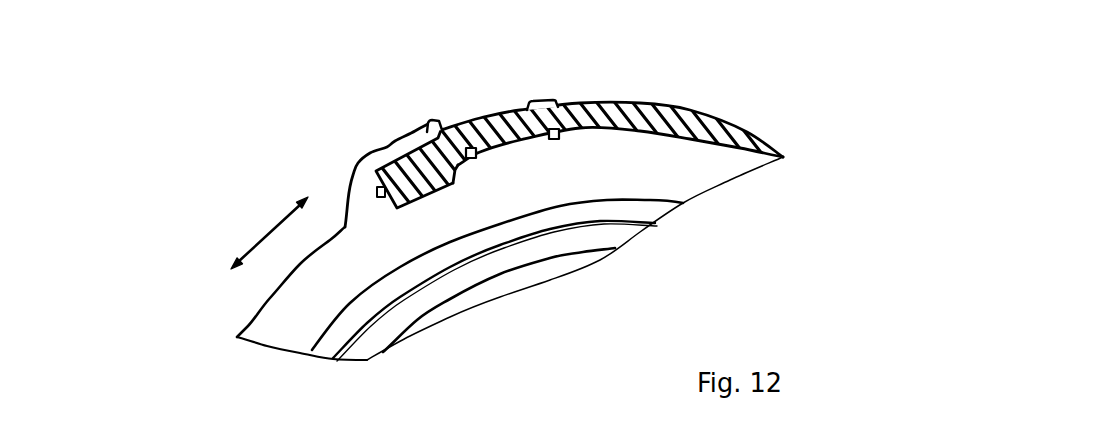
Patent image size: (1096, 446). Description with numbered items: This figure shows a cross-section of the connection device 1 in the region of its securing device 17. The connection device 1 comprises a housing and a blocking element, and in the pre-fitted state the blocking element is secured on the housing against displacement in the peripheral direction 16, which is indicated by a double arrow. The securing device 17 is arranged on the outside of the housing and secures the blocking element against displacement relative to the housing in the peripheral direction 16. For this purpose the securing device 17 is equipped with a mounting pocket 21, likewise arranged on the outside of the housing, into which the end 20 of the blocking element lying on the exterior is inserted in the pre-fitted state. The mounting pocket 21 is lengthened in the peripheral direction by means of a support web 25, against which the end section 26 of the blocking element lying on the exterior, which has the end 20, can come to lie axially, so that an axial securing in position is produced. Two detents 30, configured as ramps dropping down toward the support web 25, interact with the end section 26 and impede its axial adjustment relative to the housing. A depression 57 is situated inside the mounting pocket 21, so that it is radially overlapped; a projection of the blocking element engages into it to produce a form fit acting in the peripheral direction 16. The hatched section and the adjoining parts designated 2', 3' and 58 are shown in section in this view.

The connection device 1 is at (223, 140).
The housing part 2' is at (461, 259).
The annular component 3' is at (576, 110).
The peripheral direction 16 is at (267, 223).
The securing device 17 is at (330, 153).
The end lying on the exterior 20 is at (372, 168).
The mounting pocket 21 is at (392, 172).
The support web 25 is at (485, 112).
The end section lying on the exterior 26 is at (541, 100).
The detent 30 is at (472, 153).
The depression 57 is at (417, 165).
The step 58 is at (446, 178).